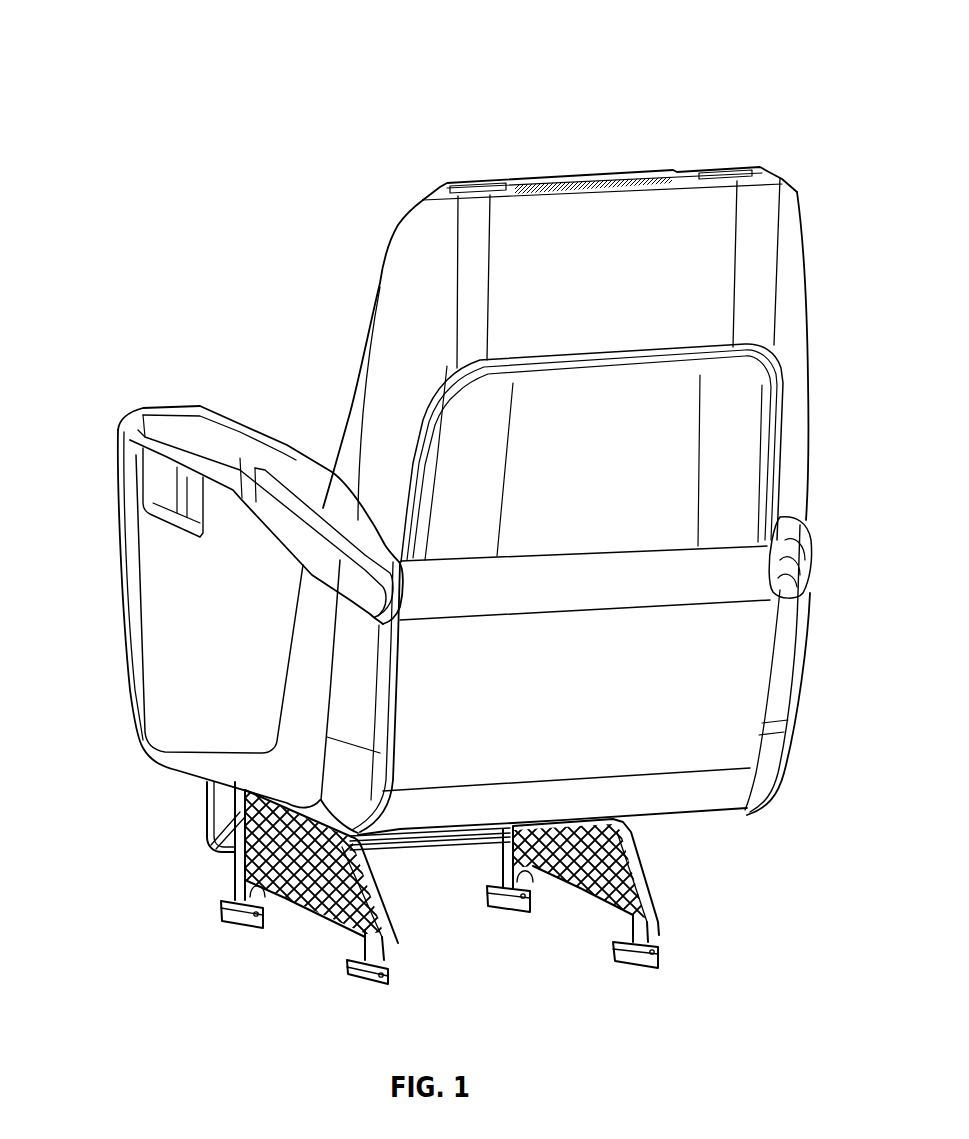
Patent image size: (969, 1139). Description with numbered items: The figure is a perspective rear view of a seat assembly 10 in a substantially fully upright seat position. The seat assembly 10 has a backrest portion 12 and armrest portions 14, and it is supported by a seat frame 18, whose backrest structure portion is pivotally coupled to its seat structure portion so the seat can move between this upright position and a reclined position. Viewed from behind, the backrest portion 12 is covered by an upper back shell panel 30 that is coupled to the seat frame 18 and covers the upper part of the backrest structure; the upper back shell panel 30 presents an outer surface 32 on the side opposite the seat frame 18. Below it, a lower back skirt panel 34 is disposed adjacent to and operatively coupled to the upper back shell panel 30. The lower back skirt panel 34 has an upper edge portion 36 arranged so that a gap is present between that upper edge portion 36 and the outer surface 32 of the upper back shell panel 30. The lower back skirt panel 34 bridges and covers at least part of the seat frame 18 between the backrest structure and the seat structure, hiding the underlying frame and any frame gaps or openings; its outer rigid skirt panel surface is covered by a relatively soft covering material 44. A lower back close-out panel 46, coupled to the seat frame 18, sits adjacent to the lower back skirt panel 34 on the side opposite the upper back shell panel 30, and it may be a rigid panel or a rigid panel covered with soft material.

The seat assembly 10 is at (461, 496).
The backrest portion 12 is at (787, 333).
The armrest portions 14 is at (167, 610).
The seat frame 18 is at (659, 932).
The upper back shell panel 30 is at (708, 270).
The outer surface 32 is at (740, 453).
The lower back skirt panel 34 is at (730, 653).
The upper edge portion 36 is at (716, 600).
The relatively soft covering material 44 is at (750, 740).
The lower back close-out panel 46 is at (462, 850).